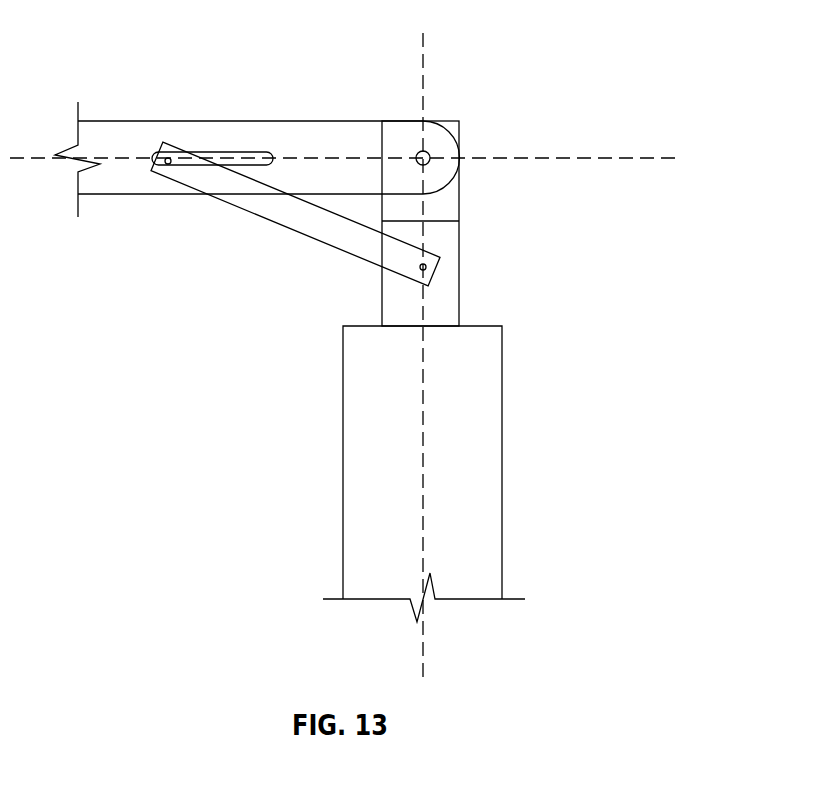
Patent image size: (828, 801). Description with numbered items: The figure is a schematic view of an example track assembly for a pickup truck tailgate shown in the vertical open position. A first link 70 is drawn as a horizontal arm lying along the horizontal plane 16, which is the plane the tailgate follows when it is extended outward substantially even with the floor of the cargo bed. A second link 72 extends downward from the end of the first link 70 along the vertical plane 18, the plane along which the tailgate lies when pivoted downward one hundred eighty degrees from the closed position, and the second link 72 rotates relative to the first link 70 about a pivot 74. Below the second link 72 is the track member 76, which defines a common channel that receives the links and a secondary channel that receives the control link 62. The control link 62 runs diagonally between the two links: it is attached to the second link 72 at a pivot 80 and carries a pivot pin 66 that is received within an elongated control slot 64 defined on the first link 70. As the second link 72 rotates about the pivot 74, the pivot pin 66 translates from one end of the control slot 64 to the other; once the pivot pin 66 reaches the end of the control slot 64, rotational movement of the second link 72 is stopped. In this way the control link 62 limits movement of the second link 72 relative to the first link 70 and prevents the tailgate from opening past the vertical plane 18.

The horizontal plane 16 is at (597, 158).
The vertical plane 18 is at (423, 59).
The control link 62 is at (291, 220).
The control slot 64 is at (186, 139).
The pivot pin 66 is at (167, 171).
The first link 70 is at (243, 128).
The second link 72 is at (447, 302).
The pivot 74 is at (430, 152).
The track member 76 is at (474, 412).
The pivot 80 is at (418, 267).